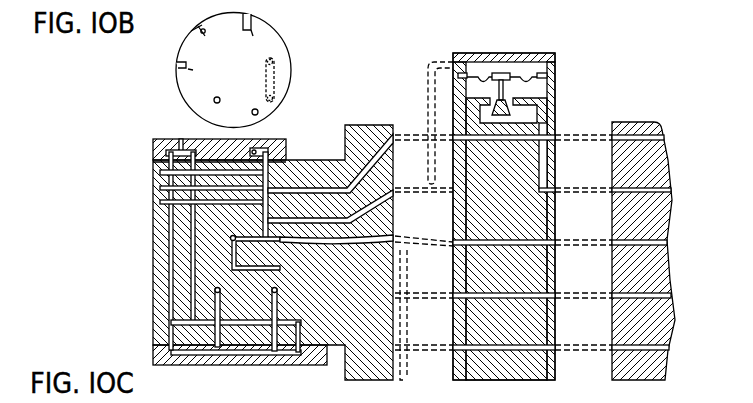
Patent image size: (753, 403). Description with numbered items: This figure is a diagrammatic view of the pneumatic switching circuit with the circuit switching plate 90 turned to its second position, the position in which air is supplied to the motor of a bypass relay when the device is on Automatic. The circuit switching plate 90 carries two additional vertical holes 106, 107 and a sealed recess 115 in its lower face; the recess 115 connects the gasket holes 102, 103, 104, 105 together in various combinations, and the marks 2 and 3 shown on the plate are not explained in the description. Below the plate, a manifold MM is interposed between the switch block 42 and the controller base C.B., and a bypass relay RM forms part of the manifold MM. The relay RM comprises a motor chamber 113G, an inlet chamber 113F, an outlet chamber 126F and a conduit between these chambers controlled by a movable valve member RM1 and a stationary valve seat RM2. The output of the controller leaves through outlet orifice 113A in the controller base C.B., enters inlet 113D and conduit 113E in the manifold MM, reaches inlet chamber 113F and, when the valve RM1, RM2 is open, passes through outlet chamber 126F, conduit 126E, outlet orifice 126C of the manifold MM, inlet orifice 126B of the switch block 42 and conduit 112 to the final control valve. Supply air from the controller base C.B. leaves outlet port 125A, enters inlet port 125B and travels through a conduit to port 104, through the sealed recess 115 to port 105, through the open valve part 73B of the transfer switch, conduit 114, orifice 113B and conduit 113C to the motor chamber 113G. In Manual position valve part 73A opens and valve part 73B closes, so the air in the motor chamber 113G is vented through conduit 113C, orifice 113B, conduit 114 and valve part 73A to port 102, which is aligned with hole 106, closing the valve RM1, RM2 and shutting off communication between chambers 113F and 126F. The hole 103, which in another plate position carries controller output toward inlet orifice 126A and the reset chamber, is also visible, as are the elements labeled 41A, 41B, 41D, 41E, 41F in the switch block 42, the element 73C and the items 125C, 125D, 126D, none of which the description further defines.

The circuit switching plate 90 is at (176, 66).
The notch 2 is at (201, 34).
The slot 3 is at (244, 25).
The vertical hole 106 is at (213, 100).
The vertical hole 107 is at (259, 111).
The sealed recess 115 is at (277, 80).
The top layer of laminated body 41A is at (181, 147).
The vertical passage 41B is at (258, 148).
The passage layer 41D is at (160, 172).
The passage layer 41E is at (160, 188).
The passage layer 41F is at (160, 202).
The switch block 42 is at (366, 122).
The gasket port 102 is at (216, 291).
The gasket orifice 103 is at (231, 238).
The gasket port 104 is at (396, 236).
The gasket port 105 is at (276, 355).
The conduit 112 is at (409, 373).
The conduit 114 is at (230, 350).
The valve part 73A is at (215, 356).
The valve part 73B is at (270, 357).
The port 73C is at (300, 355).
The outlet orifice 113A is at (612, 190).
The inlet orifice 113B is at (381, 142).
The conduit 113C is at (428, 66).
The inlet 113D is at (551, 192).
The conduit 113E is at (553, 150).
The inlet chamber 113F is at (545, 121).
The motor chamber 113G is at (548, 60).
The outlet port 125A is at (612, 243).
The inlet port 125B is at (400, 246).
The passage 125C is at (453, 262).
The passage 125D is at (553, 242).
The inlet orifice 126A is at (612, 296).
The inlet orifice 126B is at (400, 130).
The outlet orifice 126C is at (452, 297).
The passage 126D is at (553, 295).
The conduit 126E is at (453, 200).
The outlet chamber 126F is at (536, 112).
The bypass relay RM is at (505, 50).
The movable valve member RM1 is at (509, 108).
The valve seat RM2 is at (511, 76).
The controller base C.B is at (637, 118).
The manifold MM is at (554, 385).